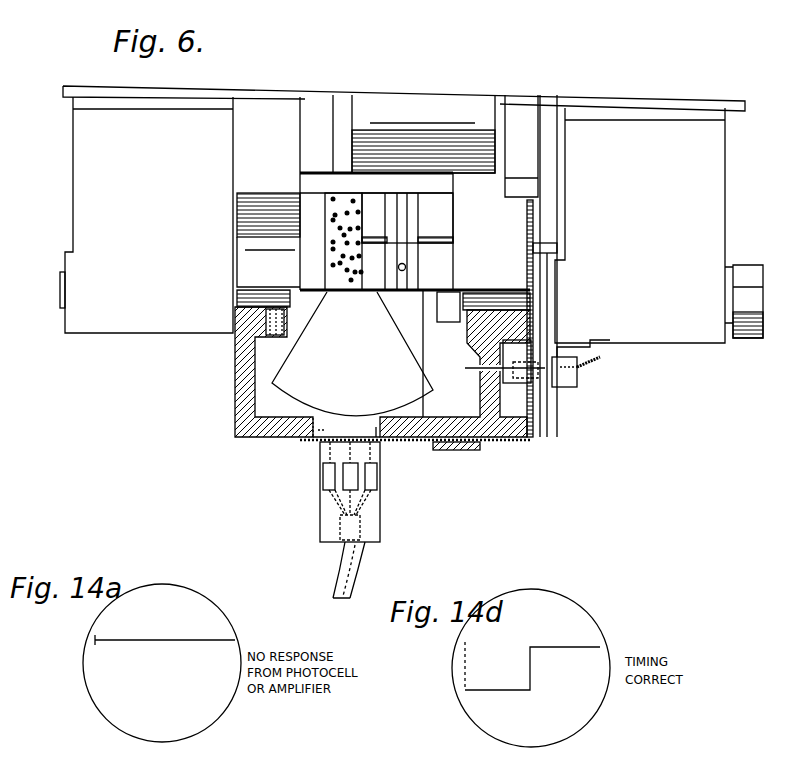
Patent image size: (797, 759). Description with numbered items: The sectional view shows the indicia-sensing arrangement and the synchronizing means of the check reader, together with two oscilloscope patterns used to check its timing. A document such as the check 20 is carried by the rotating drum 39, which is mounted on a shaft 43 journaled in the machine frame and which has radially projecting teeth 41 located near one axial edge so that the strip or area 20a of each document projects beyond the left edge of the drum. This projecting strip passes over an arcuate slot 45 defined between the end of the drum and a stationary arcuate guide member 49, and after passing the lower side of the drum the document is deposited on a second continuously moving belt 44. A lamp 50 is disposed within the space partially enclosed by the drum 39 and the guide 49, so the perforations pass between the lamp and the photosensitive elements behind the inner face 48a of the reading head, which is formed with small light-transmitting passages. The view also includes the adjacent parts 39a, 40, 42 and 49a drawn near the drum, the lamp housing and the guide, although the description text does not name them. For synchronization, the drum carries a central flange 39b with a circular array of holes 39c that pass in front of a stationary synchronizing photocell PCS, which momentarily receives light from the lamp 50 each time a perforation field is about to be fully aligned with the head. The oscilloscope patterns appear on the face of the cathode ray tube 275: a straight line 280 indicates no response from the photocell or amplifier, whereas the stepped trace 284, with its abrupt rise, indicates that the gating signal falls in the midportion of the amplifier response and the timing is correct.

In FIG. 6, the check 20 is at (490, 253).
In FIG. 6, the strip or area 20a is at (322, 273).
In FIG. 6, the drum 39 is at (533, 430).
In FIG. 6, the aperture 39a is at (366, 428).
In FIG. 6, the central flange 39b is at (480, 363).
In FIG. 6, the holes 39c is at (490, 371).
In FIG. 6, the lamp housing 40 is at (433, 217).
In FIG. 6, the teeth 41 is at (406, 267).
In FIG. 6, the shutter 42 is at (413, 203).
In FIG. 6, the shaft 43 is at (500, 298).
In FIG. 6, the second continuously moving belt 44 is at (460, 450).
In FIG. 6, the arcuate slot 45 is at (376, 428).
In FIG. 6, the inner face 48a is at (318, 445).
In FIG. 6, the arcuate guide member 49 is at (235, 431).
In FIG. 6, the lens 49a is at (307, 420).
In FIG. 6, the lamp 50 is at (372, 374).
In FIG. 6, the synchronizing photocell PCS is at (538, 387).
In FIG. 14A, the cathode ray tube 275 is at (222, 713).
In FIG. 14D, the cathode ray tube 275 is at (587, 722).
In FIG. 14A, the straight line 280 is at (173, 641).
In FIG. 14D, the trace 284 is at (530, 673).